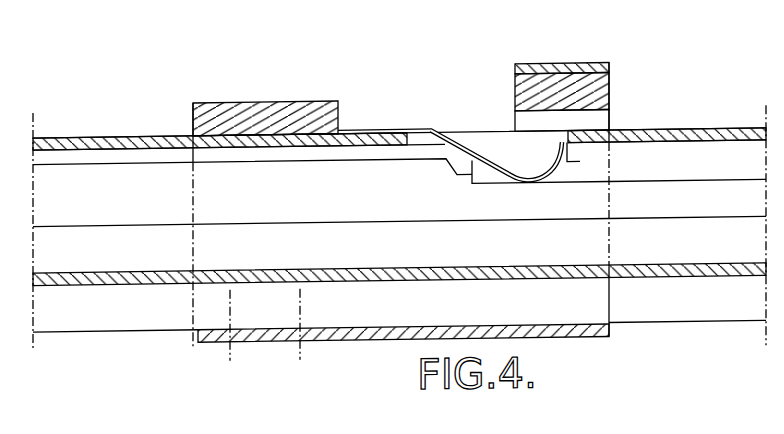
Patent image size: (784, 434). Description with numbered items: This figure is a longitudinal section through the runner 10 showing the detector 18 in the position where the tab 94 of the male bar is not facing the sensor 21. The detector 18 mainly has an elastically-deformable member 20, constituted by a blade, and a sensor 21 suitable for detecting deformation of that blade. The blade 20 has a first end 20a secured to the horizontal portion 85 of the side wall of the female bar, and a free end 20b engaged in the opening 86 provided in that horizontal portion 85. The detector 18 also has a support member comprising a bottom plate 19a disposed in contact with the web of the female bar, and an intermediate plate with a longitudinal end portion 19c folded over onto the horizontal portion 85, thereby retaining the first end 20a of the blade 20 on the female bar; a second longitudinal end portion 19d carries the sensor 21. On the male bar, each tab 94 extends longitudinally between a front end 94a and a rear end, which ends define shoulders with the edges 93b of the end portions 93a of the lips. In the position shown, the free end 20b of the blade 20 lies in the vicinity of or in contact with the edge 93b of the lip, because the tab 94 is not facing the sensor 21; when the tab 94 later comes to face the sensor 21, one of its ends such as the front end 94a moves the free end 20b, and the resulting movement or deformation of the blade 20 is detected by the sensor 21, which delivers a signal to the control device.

The device 10 is at (25, 427).
The detector 18 is at (561, 69).
The bottom plate 19a is at (197, 340).
The longitudinal end portion 19c is at (240, 115).
The second longitudinal end portion 19d is at (553, 78).
The elastically-deformable member 20 is at (437, 126).
The first end 20a is at (193, 140).
The free end 20b is at (580, 173).
The sensor 21 is at (590, 98).
The horizontal portion 85 is at (70, 139).
The opening 86 is at (493, 137).
The end portions 93a is at (717, 213).
The edge 93b is at (683, 188).
The tab 94 is at (377, 198).
The front end 94a is at (430, 137).